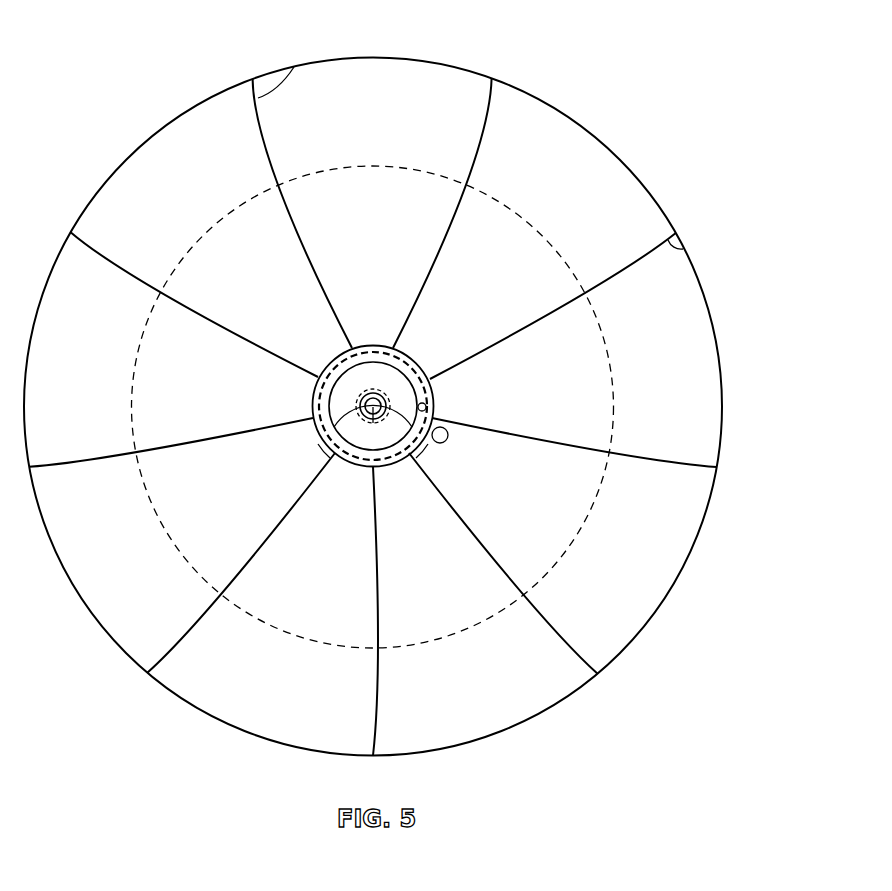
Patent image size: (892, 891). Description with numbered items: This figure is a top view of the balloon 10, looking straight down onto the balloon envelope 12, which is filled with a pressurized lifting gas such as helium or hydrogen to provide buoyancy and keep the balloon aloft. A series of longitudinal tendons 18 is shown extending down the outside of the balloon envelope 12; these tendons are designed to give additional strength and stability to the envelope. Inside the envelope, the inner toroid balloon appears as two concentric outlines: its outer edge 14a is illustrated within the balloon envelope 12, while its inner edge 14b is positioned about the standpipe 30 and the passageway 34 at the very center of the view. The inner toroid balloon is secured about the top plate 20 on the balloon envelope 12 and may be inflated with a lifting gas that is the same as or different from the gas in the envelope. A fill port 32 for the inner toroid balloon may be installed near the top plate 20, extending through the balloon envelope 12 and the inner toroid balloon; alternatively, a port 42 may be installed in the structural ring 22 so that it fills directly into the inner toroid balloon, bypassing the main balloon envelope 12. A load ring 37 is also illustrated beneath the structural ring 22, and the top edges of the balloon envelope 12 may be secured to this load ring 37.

The balloon 10 is at (127, 64).
The balloon envelope 12 is at (613, 166).
The outer edge 14a is at (133, 377).
The inner edge 14b is at (377, 398).
The longitudinal tendons 18 is at (258, 98).
The top plate 20 is at (342, 388).
The structural ring 22 is at (388, 453).
The standpipe 30 is at (322, 447).
The fill port 32 is at (449, 437).
The passageway 34 is at (373, 407).
The load ring 37 is at (320, 432).
The port 42 is at (428, 405).